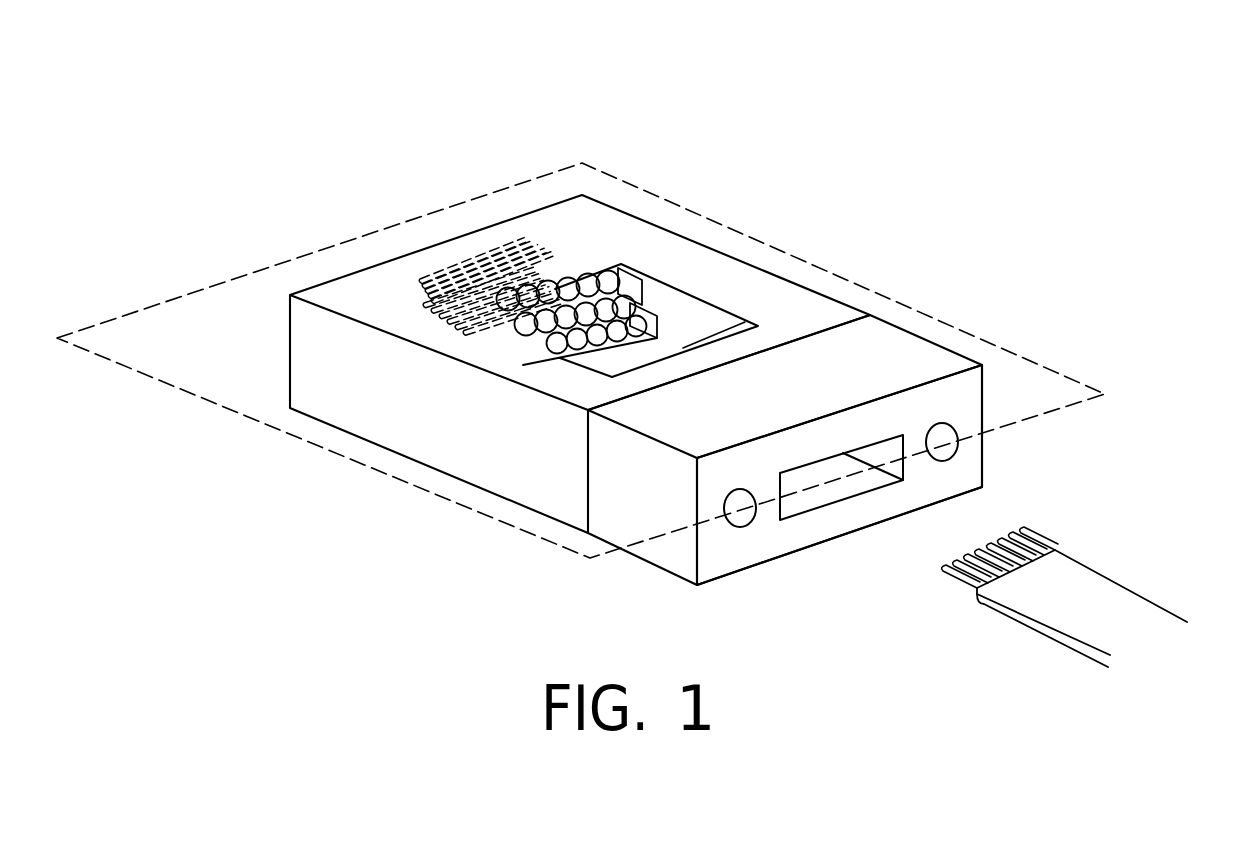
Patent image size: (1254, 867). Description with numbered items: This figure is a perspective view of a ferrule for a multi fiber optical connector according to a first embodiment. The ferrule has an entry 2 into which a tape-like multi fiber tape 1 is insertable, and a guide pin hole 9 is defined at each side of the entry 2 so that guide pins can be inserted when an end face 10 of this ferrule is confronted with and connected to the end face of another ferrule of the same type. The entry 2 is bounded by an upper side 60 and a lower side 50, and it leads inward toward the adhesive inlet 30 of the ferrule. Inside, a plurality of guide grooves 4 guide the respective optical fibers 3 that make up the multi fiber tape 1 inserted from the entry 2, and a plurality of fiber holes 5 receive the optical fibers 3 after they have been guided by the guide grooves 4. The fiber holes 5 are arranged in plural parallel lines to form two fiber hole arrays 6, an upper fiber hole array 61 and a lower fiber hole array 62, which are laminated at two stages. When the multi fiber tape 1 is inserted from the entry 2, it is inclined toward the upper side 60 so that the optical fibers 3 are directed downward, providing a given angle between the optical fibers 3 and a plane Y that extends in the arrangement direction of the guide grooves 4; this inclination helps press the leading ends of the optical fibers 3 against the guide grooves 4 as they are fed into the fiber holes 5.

The multi fiber tape 1 is at (1137, 579).
The entry 2 is at (807, 511).
The optical fibers 3 is at (1043, 548).
The guide grooves 4 is at (652, 343).
The fiber holes 5 is at (548, 285).
The fiber hole arrays 6 is at (612, 192).
The upper fiber hole array 61 is at (608, 97).
The lower fiber hole array 62 is at (683, 121).
The guide pin hole 9 is at (958, 447).
The end face 10 is at (350, 276).
The adhesive inlet 30 is at (813, 290).
The lower side 50 is at (868, 491).
The upper side 60 is at (872, 442).
The plane Y is at (388, 476).